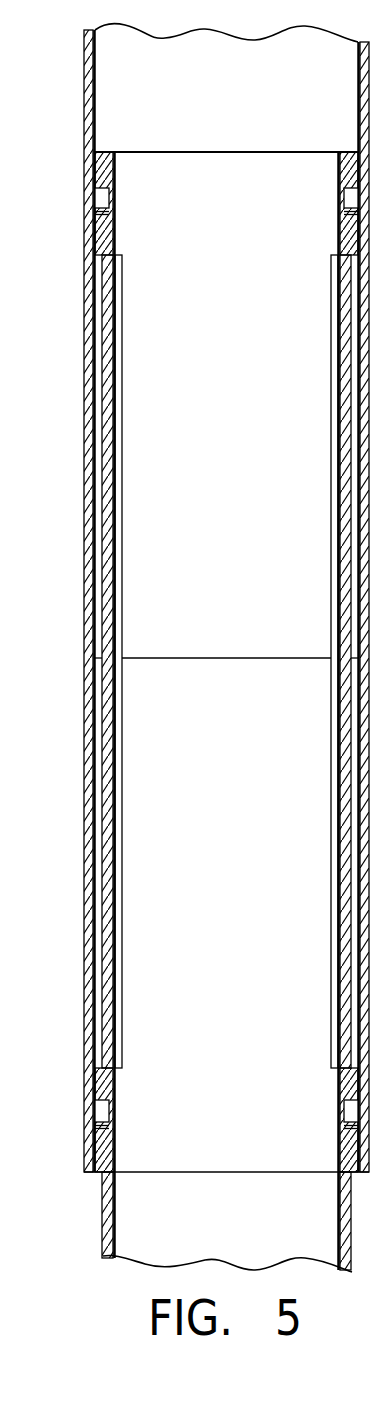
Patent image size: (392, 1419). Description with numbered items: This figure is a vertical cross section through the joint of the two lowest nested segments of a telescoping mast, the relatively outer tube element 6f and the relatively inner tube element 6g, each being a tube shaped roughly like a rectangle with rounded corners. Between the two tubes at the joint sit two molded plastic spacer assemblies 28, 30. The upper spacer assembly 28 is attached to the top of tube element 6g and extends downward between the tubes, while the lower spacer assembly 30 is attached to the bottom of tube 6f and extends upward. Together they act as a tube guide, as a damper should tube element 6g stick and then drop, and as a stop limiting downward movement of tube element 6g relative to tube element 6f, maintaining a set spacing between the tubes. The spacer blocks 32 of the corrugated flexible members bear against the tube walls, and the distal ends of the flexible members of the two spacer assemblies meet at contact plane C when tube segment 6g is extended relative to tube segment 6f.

The upper spacer assembly 28 is at (88, 234).
The lower spacer assembly 30 is at (87, 1165).
The spacer block 32 is at (107, 198).
The tube element 6f is at (365, 302).
The tube element 6g is at (113, 950).
The contact plane C is at (219, 658).